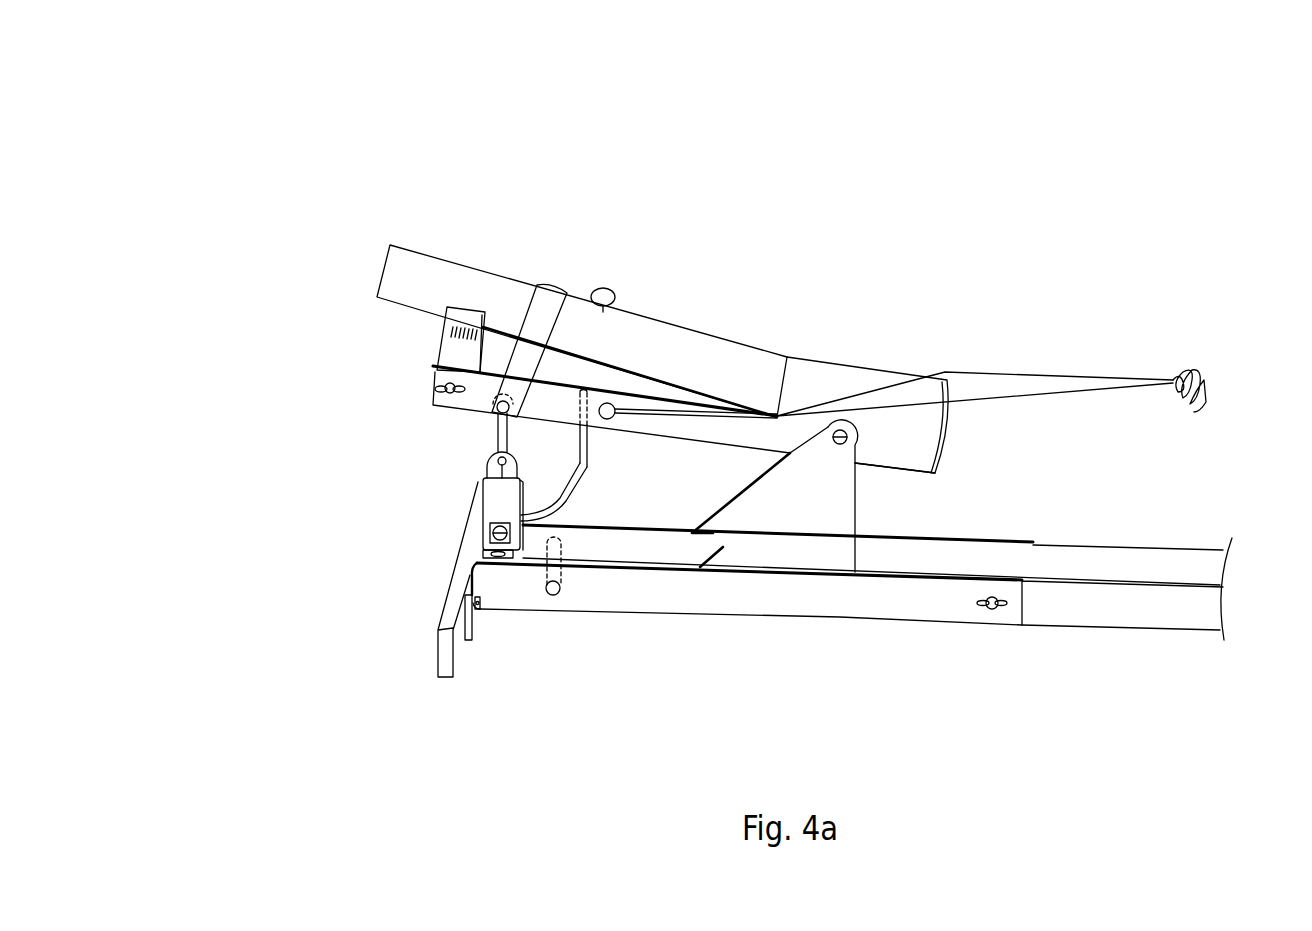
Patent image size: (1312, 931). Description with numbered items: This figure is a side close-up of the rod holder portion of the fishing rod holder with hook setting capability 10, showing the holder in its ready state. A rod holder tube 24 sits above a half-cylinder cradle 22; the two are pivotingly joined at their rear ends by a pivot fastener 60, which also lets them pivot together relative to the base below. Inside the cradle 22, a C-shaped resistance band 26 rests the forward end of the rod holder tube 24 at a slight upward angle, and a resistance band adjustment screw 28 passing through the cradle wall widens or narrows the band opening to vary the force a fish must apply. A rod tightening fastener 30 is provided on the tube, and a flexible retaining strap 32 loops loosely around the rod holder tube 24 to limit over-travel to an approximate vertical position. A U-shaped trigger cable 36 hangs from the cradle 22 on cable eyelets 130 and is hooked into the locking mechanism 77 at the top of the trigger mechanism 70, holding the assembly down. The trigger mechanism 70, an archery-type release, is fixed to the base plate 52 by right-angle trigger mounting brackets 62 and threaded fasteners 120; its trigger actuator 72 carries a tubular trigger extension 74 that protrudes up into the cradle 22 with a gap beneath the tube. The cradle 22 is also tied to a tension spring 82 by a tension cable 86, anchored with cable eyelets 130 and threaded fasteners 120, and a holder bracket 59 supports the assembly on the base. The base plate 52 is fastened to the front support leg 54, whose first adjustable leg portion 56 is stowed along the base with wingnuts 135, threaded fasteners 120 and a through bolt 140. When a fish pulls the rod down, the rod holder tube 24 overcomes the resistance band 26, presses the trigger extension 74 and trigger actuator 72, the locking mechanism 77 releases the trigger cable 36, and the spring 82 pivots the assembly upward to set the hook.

The fishing rod holder with hook setting capability 10 is at (300, 131).
The cradle 22 is at (592, 377).
The rod holder tube 24 is at (447, 272).
The resistance band 26 is at (453, 353).
The resistance band adjustment screw 28 is at (449, 394).
The rod tightening fastener 30 is at (613, 289).
The retaining strap 32 is at (547, 296).
The trigger cable 36 is at (497, 429).
The base plate 52 is at (1200, 568).
The front support leg 54 is at (450, 623).
The first adjustable leg portion 56 is at (660, 566).
The holder bracket 59 is at (783, 523).
The pivot fastener 60 is at (907, 460).
The trigger mounting bracket 62 is at (481, 543).
The trigger mechanism 70 is at (488, 497).
The trigger actuator 72 is at (557, 501).
The trigger extension 74 is at (588, 460).
The locking mechanism 77 is at (488, 467).
The spring 82 is at (1182, 368).
The tension cable 86 is at (1100, 386).
The threaded fastener 120 is at (492, 533).
The cable eyelet 130 is at (616, 404).
The wingnut 135 is at (992, 610).
The through bolt 140 is at (561, 540).